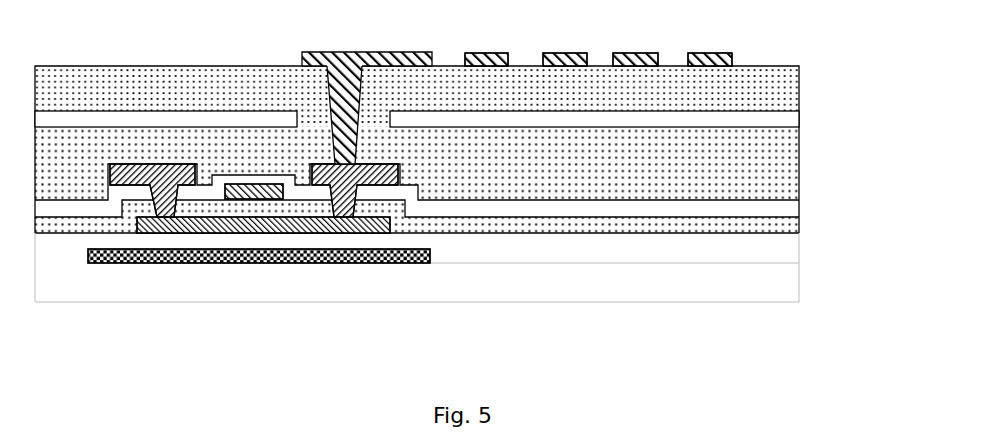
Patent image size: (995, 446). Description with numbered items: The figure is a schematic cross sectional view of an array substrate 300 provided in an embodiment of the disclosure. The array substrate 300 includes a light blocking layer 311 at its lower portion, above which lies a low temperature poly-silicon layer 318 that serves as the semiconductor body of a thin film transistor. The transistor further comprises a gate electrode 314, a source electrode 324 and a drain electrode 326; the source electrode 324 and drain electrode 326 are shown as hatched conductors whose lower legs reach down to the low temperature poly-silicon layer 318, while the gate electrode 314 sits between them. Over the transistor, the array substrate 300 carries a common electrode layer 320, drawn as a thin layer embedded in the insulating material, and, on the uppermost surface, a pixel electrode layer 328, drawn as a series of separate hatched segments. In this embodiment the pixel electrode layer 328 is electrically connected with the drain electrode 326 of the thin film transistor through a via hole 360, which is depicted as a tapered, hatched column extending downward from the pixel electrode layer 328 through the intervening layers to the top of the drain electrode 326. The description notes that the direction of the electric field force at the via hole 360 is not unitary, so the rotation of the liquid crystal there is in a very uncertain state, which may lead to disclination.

The array substrate 300 is at (417, 163).
The light blocking layer 311 is at (417, 262).
The gate electrode 314 is at (268, 200).
The low temperature poly-silicon layer 318 is at (216, 224).
The common electrode layer 320 is at (785, 122).
The source electrode 324 is at (158, 218).
The drain electrode 326 is at (344, 218).
The pixel electrode layer 328 is at (485, 62).
The via hole 360 is at (328, 102).